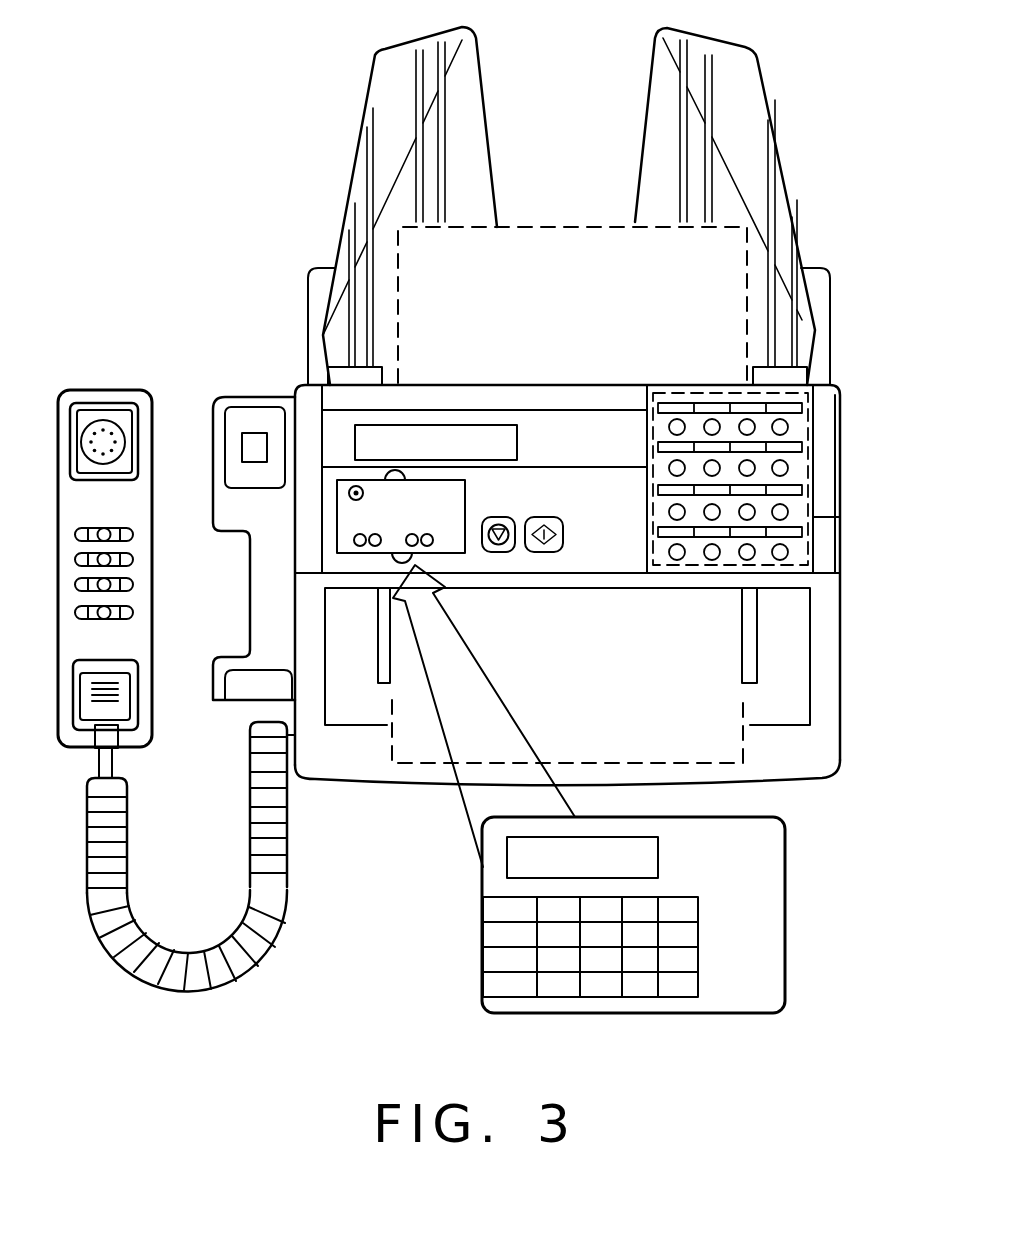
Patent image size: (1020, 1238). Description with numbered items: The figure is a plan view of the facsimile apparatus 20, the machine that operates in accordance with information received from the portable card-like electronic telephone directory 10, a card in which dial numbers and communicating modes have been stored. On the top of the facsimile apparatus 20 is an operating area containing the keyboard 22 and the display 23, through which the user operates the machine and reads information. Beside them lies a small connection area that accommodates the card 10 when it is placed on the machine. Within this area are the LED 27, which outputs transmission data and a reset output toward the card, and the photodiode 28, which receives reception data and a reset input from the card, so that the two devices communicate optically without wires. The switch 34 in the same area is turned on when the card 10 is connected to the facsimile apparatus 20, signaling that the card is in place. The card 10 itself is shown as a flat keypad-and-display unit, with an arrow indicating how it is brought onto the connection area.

The portable card-like electronic telephone directory 10 is at (785, 970).
The facsimile apparatus 20 is at (795, 783).
The keyboard 22 is at (808, 514).
The display 23 is at (455, 422).
The LED 27 is at (363, 534).
The photodiode 28 is at (423, 533).
The switch 34 is at (353, 487).